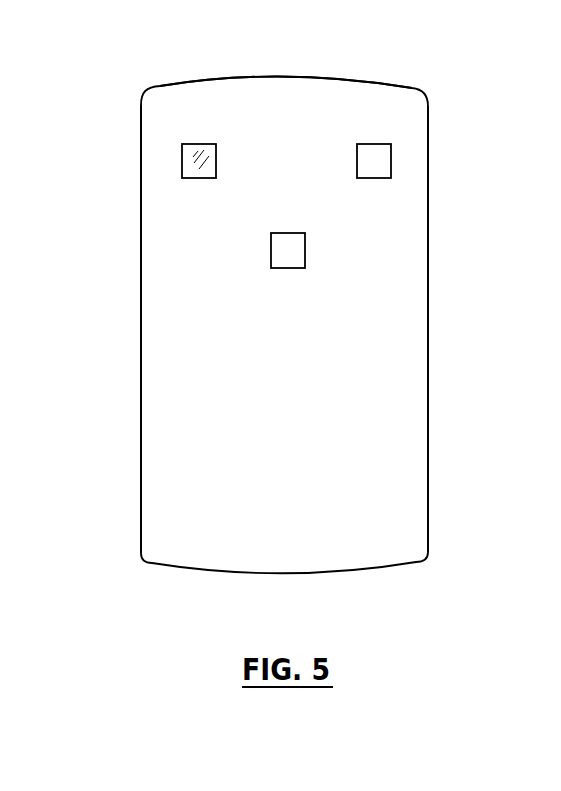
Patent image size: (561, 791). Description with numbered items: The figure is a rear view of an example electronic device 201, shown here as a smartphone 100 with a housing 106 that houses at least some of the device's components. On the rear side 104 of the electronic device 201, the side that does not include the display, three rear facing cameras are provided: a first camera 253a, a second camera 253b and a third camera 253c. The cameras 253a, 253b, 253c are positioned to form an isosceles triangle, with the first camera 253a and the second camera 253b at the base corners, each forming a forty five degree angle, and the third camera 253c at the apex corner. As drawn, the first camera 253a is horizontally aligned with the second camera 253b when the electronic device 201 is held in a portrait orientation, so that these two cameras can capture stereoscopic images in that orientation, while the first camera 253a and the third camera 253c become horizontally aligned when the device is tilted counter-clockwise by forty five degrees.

The smartphone 100 is at (437, 78).
The electronic device 201 is at (344, 70).
The rear side 104 is at (389, 497).
The housing 106 is at (429, 407).
The first camera 253a is at (187, 165).
The second camera 253b is at (385, 168).
The third camera 253c is at (274, 248).